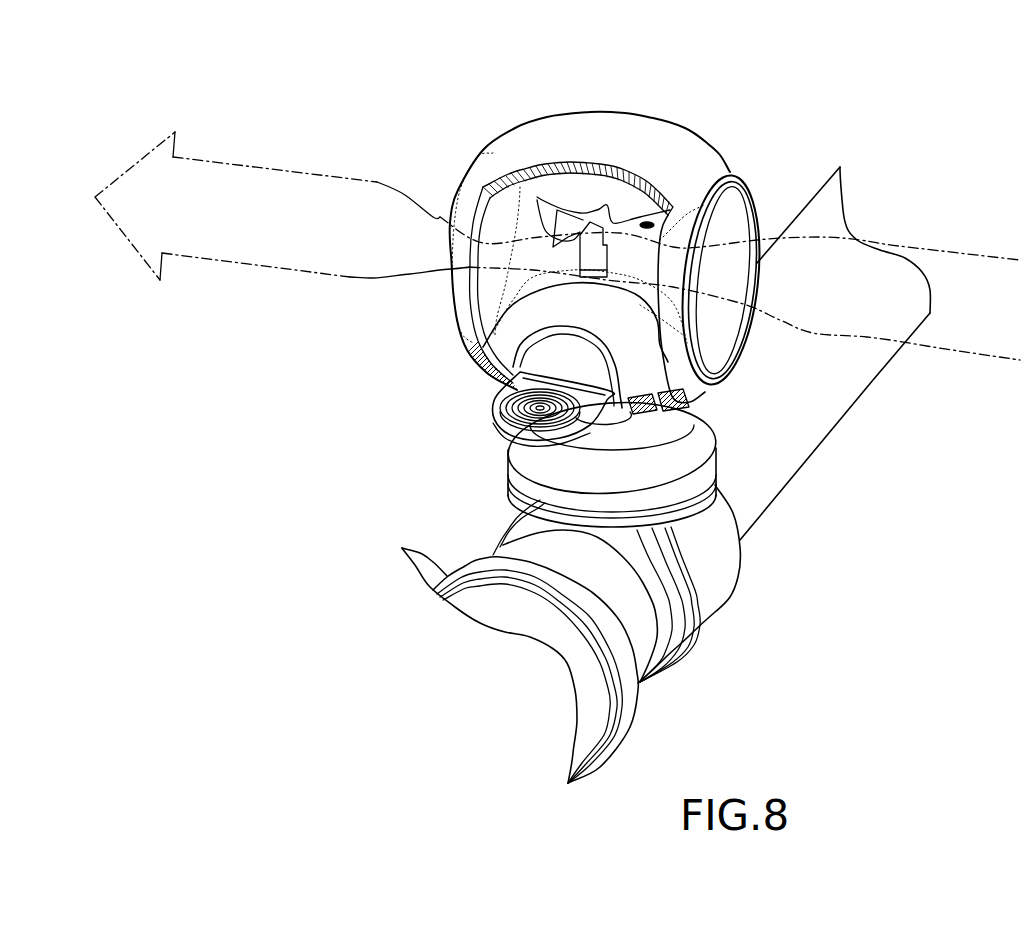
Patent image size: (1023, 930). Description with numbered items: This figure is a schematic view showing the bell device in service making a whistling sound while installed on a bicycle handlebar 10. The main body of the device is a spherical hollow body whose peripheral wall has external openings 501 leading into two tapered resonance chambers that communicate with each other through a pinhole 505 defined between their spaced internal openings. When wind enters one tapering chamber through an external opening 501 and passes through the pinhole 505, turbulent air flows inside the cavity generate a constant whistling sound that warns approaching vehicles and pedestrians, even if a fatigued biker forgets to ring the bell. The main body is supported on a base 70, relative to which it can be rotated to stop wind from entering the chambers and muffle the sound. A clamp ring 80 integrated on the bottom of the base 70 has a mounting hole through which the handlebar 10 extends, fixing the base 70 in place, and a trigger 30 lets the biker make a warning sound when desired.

The bicycle handlebar 10 is at (807, 427).
The trigger 30 is at (493, 425).
The base 70 is at (710, 443).
The clamp ring 80 is at (713, 600).
The external opening 501 is at (753, 193).
The pinhole 505 is at (607, 217).